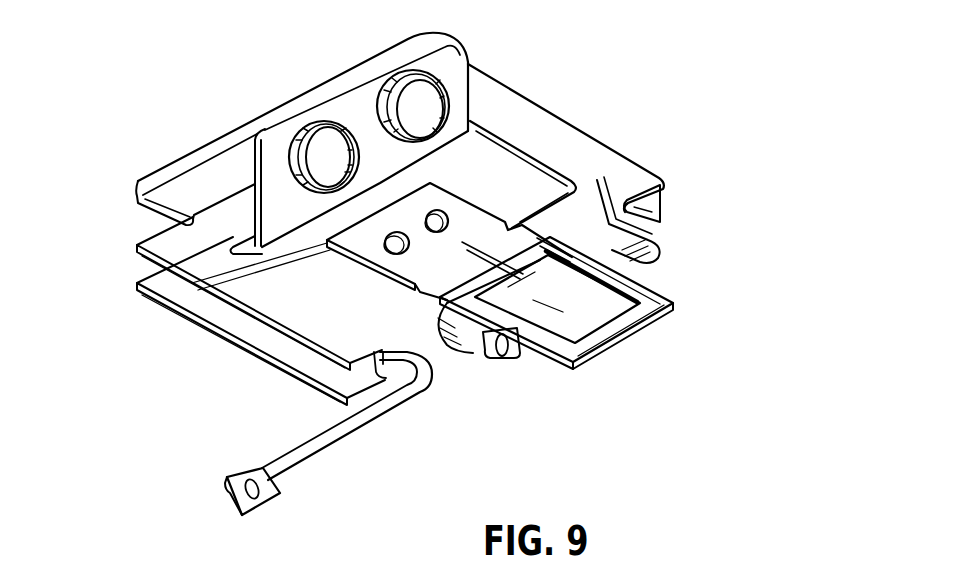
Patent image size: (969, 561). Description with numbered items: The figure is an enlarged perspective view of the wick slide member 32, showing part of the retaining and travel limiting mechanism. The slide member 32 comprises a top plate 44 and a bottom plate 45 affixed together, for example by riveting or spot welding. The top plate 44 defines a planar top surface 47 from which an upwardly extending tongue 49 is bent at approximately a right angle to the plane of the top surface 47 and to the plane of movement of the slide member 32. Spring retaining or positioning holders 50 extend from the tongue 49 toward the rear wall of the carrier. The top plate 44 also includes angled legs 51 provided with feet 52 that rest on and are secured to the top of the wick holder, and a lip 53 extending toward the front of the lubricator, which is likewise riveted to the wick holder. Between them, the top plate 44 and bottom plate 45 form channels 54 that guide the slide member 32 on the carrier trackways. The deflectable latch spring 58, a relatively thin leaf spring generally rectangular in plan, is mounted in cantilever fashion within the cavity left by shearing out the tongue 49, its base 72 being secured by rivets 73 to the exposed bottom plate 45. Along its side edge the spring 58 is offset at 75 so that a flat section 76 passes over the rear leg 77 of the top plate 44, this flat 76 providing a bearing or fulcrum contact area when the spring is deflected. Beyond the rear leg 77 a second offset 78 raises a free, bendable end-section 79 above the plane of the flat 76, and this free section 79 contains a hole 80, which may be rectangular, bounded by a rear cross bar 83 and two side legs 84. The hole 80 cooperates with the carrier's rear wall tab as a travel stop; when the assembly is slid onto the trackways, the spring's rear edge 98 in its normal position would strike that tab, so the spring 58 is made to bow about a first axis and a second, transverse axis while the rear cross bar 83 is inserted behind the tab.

The wick slide member 32 is at (660, 107).
The top plate 44 is at (543, 108).
The bottom plate 45 is at (420, 172).
The planar top surface 47 is at (170, 240).
The tongue 49 is at (452, 67).
The spring retaining holders 50 is at (313, 122).
The angled legs 51 is at (327, 440).
The feet 52 is at (257, 507).
The lip 53 is at (240, 127).
The channels 54 is at (663, 197).
The deflectable latch spring 58 is at (683, 300).
The spring base 72 is at (467, 222).
The rivets 73 is at (155, 292).
The offset 75 is at (390, 288).
The flat section 76 is at (307, 387).
The rear leg 77 is at (313, 332).
The second offset 78 is at (600, 178).
The free end-section 79 is at (640, 287).
The hole 80 is at (606, 306).
The rear cross bar 83 is at (584, 343).
The side legs 84 is at (628, 268).
The rear edge 98 is at (613, 335).